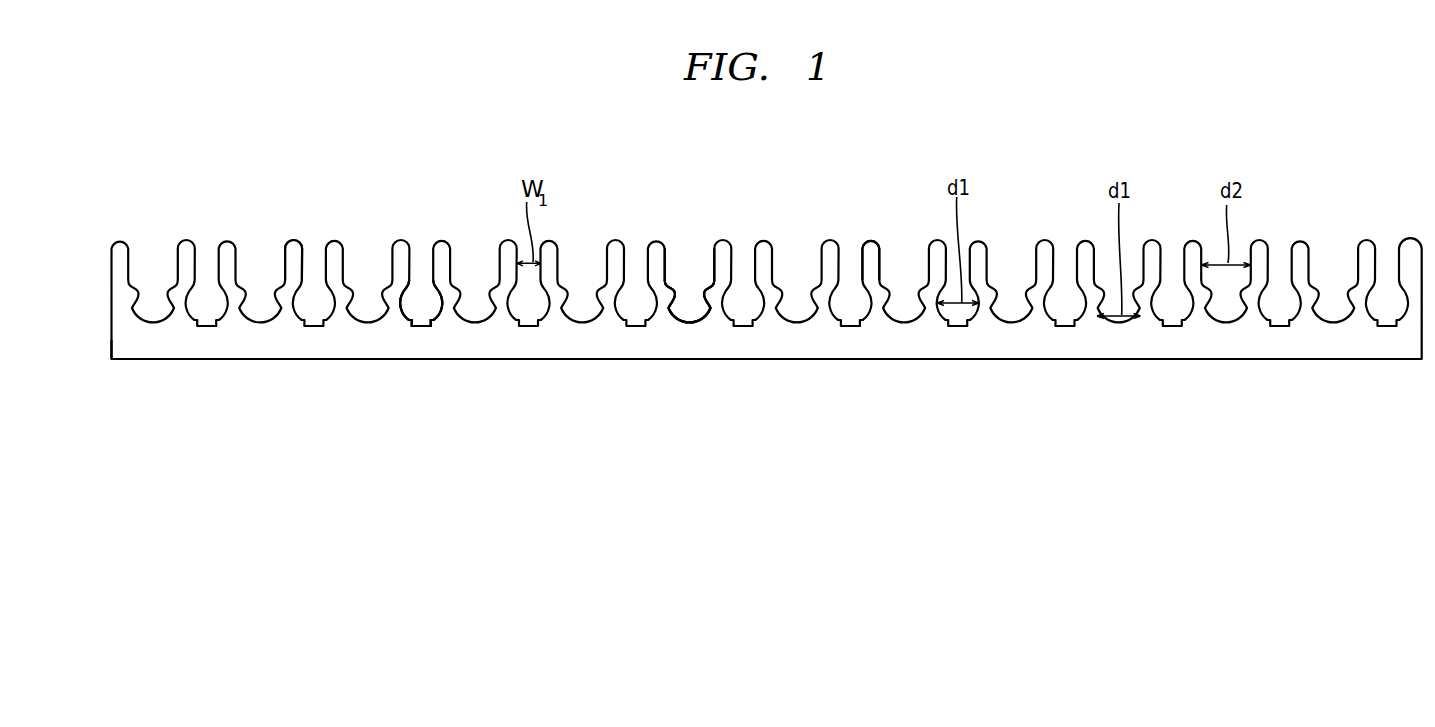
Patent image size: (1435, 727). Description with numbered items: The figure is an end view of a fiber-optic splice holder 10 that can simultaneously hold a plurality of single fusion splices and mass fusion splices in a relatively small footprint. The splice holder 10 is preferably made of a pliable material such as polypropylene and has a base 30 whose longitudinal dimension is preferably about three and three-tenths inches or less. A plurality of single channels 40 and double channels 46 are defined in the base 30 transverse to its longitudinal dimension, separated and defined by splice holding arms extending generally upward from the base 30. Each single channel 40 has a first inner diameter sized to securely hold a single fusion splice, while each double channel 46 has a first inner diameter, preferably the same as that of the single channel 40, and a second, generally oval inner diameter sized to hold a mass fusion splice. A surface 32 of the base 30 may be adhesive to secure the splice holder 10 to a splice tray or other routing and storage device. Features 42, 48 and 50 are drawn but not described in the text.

The fiber-optic splice holder 10 is at (1063, 130).
The base 30 is at (292, 343).
The surface of the base 32 is at (1000, 360).
The single channel 40 is at (416, 240).
The enlarged bottom portion of first slot 42 is at (420, 307).
The double channel 46 is at (711, 242).
The enlarged bulb portion of second slot 48 is at (690, 322).
The neck of second slot 50 is at (679, 255).